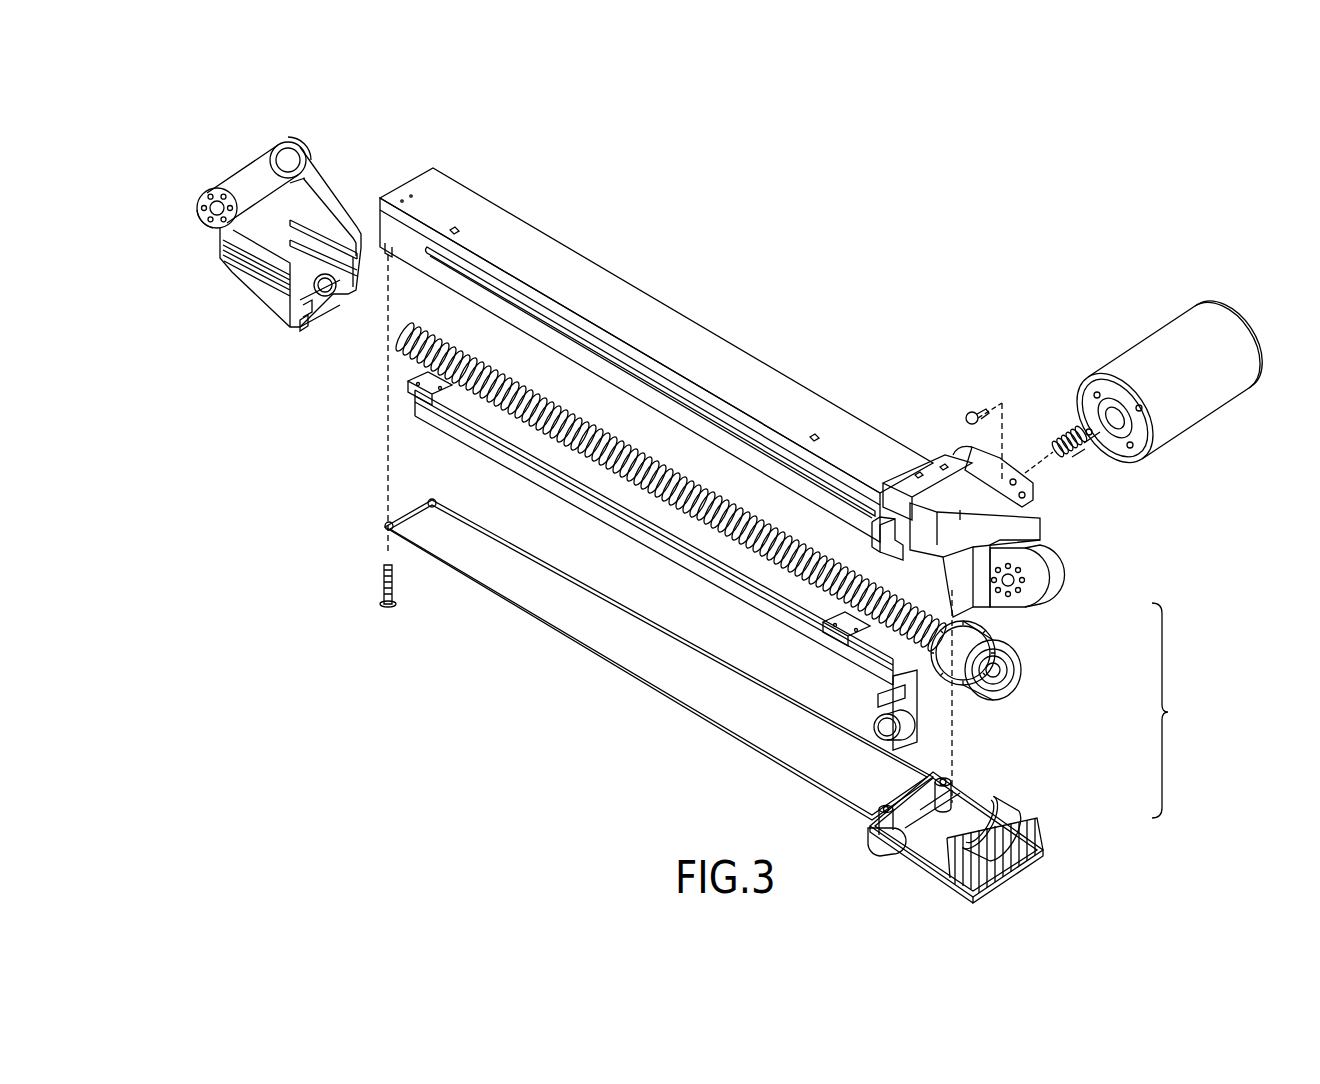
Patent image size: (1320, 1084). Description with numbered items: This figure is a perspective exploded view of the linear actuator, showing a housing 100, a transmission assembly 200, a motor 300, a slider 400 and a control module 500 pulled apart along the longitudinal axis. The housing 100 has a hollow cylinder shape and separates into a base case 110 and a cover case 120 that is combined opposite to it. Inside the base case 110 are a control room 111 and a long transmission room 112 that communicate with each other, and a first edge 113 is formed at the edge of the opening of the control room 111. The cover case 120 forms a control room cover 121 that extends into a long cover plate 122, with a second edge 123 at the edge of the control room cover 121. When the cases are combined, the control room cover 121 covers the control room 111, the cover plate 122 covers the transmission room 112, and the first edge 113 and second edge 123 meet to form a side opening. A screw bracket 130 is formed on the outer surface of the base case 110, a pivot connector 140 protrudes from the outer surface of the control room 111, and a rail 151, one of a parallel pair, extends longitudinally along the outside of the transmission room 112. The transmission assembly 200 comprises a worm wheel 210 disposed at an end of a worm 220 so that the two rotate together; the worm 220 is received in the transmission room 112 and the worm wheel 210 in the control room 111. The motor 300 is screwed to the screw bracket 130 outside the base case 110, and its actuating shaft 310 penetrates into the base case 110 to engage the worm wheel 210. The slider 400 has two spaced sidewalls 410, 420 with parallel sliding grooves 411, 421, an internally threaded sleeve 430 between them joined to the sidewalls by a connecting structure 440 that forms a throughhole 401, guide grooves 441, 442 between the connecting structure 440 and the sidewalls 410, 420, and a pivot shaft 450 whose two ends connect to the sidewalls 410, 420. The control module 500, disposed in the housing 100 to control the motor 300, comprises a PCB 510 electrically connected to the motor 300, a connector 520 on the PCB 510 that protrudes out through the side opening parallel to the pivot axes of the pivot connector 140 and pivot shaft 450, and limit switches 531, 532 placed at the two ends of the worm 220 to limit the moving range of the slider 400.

The housing 100 is at (990, 644).
The base case 110 is at (1016, 519).
The control room 111 is at (1027, 512).
The transmission room 112 is at (656, 355).
The first edge 113 is at (881, 555).
The cover case 120 is at (968, 814).
The control room cover 121 is at (963, 793).
The cover plate 122 is at (647, 687).
The second edge 123 is at (867, 840).
The screw bracket 130 is at (1010, 483).
The pivot connector 140 is at (1053, 583).
The rail 151 is at (583, 340).
The transmission assembly 200 is at (708, 510).
The worm wheel 210 is at (987, 618).
The worm 220 is at (603, 417).
The motor 300 is at (1143, 376).
The actuating shaft 310 is at (1072, 430).
The slider 400 is at (312, 260).
The throughhole 401 is at (307, 310).
The sidewall 410 is at (252, 285).
The sliding groove 411 is at (293, 313).
The sidewall 420 is at (374, 227).
The sliding groove 421 is at (347, 257).
The sleeve 430 is at (333, 294).
The connecting structure 440 is at (347, 297).
The guide groove 441 is at (300, 327).
The guide groove 442 is at (358, 283).
The pivot shaft 450 is at (255, 173).
The control module 500 is at (626, 561).
The PCB 510 is at (897, 703).
The connector 520 is at (873, 723).
The limit switch 531 is at (412, 386).
The limit switch 532 is at (820, 620).